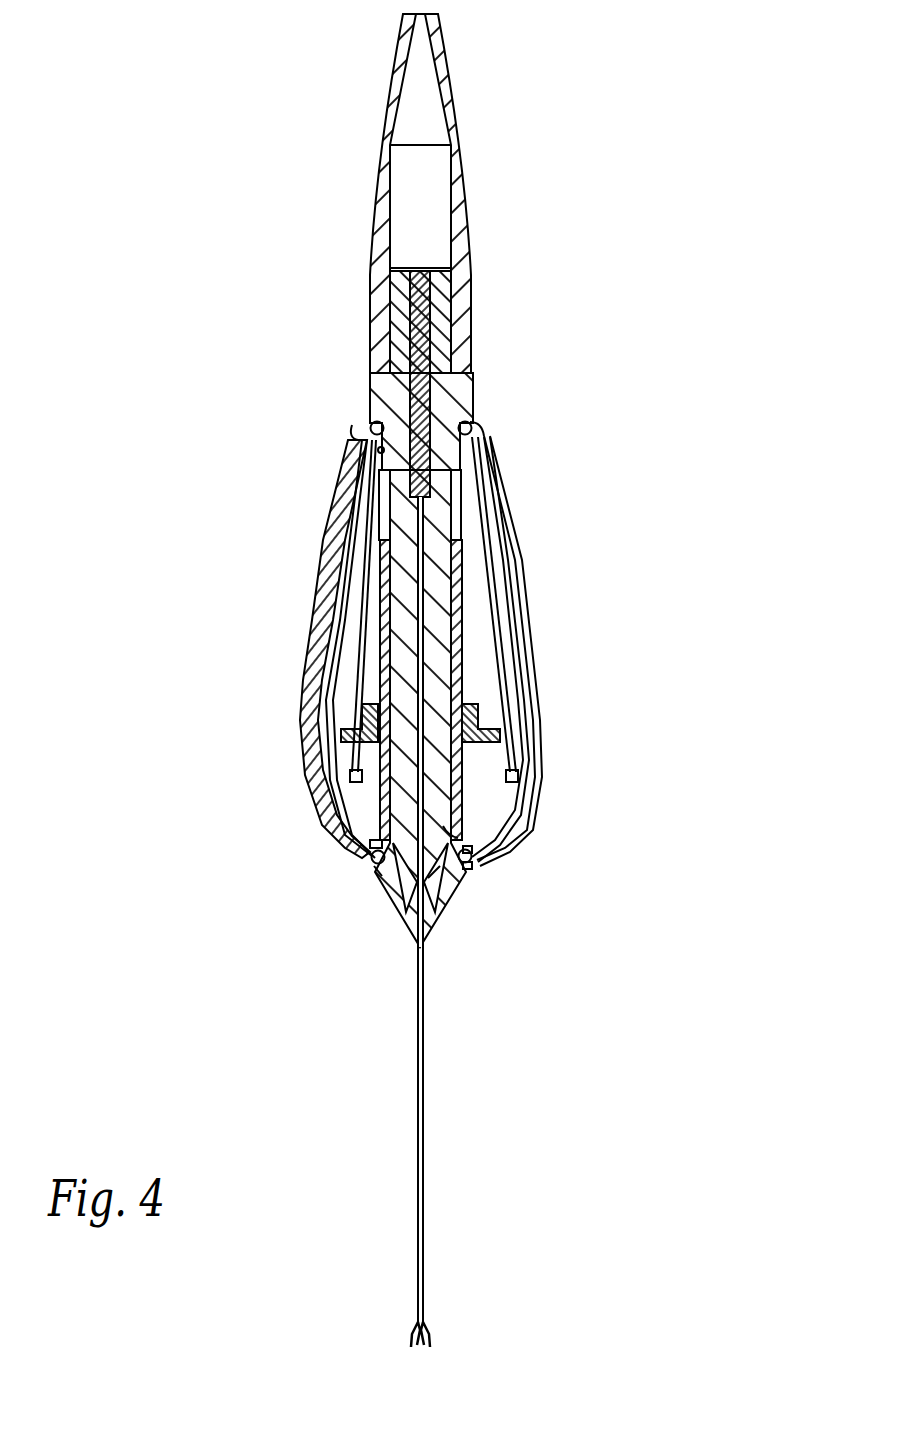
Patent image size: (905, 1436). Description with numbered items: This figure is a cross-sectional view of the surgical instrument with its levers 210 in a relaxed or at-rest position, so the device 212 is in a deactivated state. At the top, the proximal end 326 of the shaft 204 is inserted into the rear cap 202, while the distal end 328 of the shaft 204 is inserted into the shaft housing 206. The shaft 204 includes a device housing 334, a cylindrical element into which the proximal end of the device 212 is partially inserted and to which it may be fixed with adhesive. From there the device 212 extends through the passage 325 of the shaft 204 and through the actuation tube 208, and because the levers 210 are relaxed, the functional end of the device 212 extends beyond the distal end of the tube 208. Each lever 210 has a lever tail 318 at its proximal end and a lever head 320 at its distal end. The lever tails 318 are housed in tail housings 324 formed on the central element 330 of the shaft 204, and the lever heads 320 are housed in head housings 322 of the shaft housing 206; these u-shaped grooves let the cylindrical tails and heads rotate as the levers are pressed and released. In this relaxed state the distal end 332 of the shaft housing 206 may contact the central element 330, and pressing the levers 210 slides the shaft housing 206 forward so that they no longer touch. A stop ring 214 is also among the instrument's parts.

The rear cap 202 is at (372, 247).
The shaft 204 is at (368, 392).
The shaft housing 206 is at (462, 601).
The actuation tube 208 is at (417, 1139).
The lever 210 is at (322, 632).
The device 212 is at (415, 525).
The stop ring 214 is at (497, 738).
The lever tail 318 is at (370, 426).
The lever head 320 is at (371, 857).
The head housing 322 is at (380, 870).
The tail housing 324 is at (373, 440).
The passage 325 is at (425, 878).
The proximal end of shaft 326 is at (433, 292).
The distal end of shaft 328 is at (443, 830).
The central element 330 is at (473, 386).
The distal end of shaft housing 332 is at (384, 562).
The device housing 334 is at (437, 346).